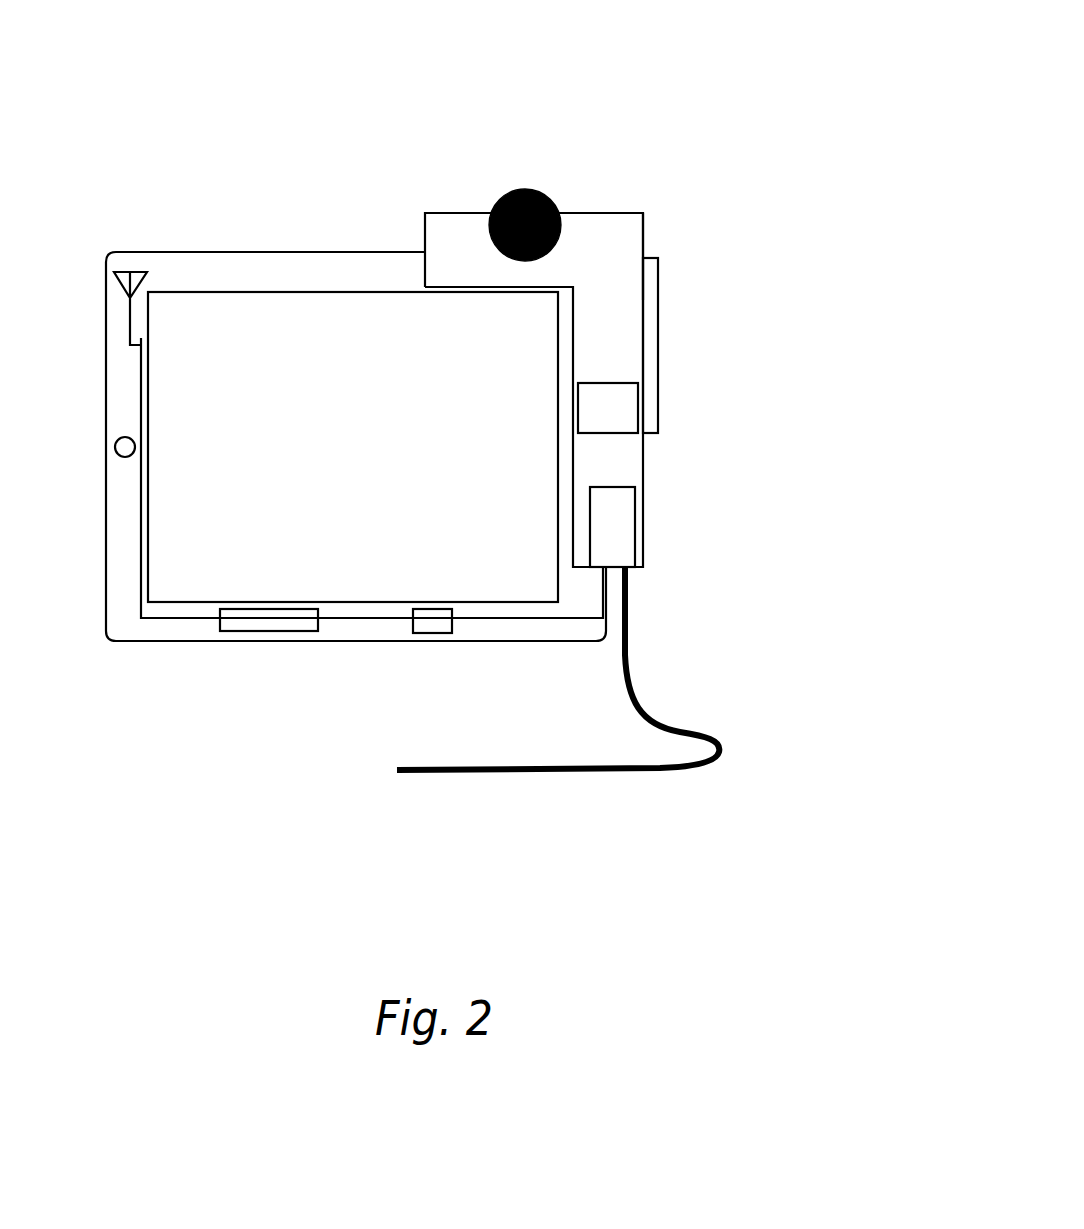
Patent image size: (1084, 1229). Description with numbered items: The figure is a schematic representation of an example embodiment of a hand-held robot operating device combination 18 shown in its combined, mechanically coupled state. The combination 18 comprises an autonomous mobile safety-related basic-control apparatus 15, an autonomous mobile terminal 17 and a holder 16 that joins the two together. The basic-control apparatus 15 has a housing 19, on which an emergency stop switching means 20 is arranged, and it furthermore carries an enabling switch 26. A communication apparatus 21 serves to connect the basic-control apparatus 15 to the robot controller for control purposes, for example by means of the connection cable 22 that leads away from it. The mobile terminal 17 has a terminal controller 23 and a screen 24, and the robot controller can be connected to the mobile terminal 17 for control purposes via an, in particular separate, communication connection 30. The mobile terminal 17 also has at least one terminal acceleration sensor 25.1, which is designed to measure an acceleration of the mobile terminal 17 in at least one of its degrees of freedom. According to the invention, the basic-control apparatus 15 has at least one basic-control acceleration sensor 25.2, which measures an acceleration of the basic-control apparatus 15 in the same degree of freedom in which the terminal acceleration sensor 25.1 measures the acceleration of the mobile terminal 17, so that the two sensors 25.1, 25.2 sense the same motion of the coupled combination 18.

The mobile safety-related basic-control apparatus 15 is at (626, 208).
The holder 16 is at (416, 248).
The mobile terminal 17 is at (113, 642).
The hand-held robot operating device combination 18 is at (598, 120).
The housing 19 is at (633, 230).
The emergency stop switching means 20 is at (535, 189).
The communication apparatus 21 is at (625, 520).
The connection cable 22 is at (553, 773).
The terminal controller 23 is at (262, 620).
The screen 24 is at (372, 455).
The terminal acceleration sensor 25.1 is at (430, 623).
The basic-control acceleration sensor 25.2 is at (613, 410).
The enabling switch 26 is at (657, 343).
The communication connection 30 is at (130, 317).